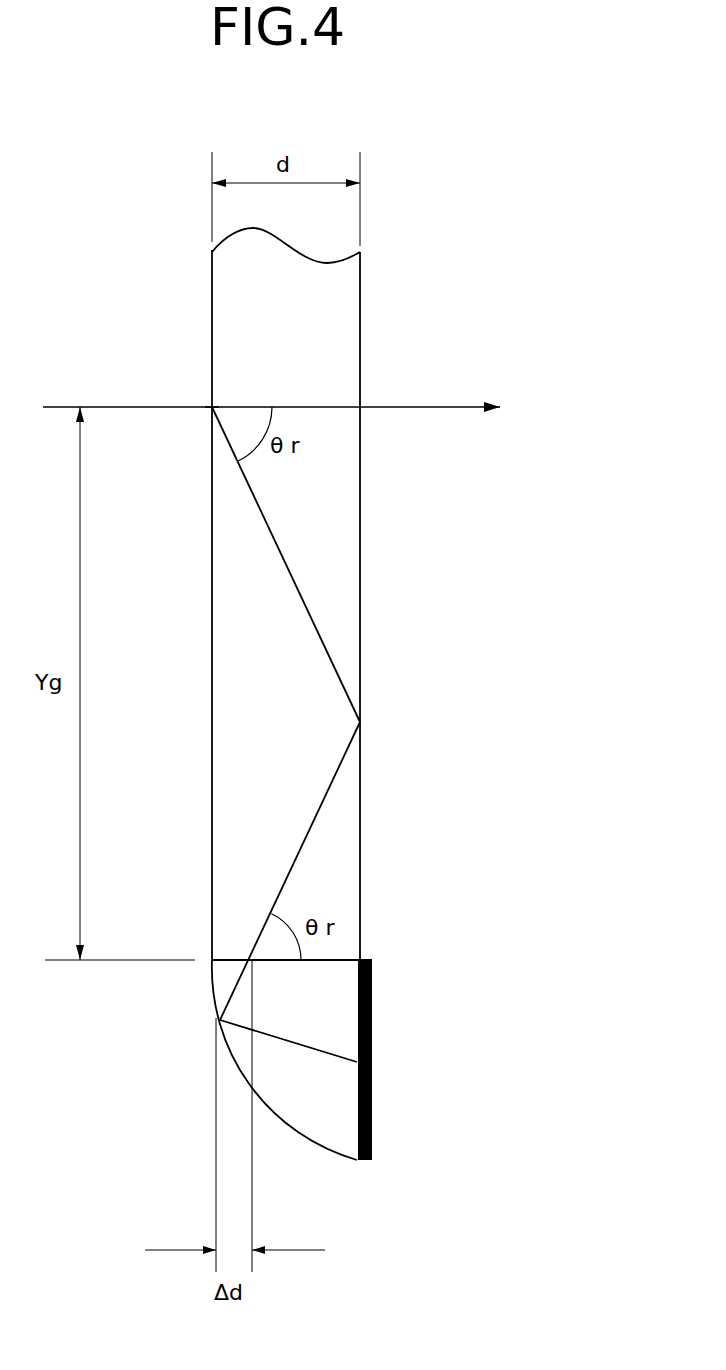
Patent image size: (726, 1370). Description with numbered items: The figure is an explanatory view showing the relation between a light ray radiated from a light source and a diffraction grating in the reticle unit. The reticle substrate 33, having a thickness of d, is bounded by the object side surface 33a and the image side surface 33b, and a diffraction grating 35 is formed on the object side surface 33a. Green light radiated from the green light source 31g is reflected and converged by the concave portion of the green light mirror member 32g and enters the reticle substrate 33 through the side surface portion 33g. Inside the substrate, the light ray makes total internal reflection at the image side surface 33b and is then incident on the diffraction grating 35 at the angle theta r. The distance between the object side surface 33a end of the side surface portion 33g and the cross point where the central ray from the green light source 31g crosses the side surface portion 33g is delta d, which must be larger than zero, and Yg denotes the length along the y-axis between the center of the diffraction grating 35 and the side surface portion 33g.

The reticle substrate 33 is at (345, 340).
The object side surface 33a is at (212, 577).
The image side surface 33b is at (362, 577).
The diffraction grating 35 is at (212, 407).
The side surface portion 33g is at (340, 960).
The green light source 31g is at (372, 1058).
The green light mirror member 32g is at (320, 1153).